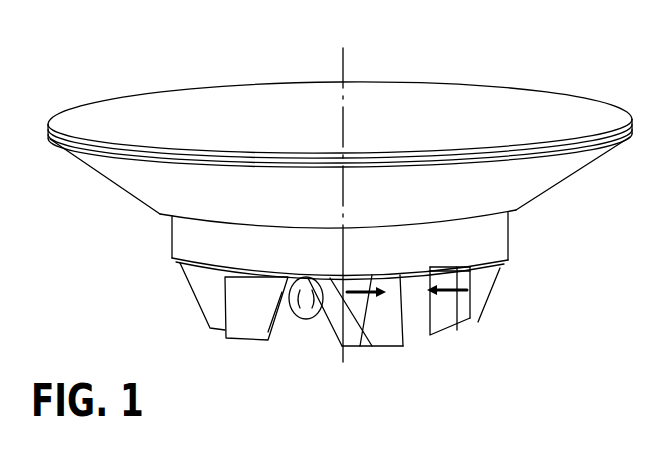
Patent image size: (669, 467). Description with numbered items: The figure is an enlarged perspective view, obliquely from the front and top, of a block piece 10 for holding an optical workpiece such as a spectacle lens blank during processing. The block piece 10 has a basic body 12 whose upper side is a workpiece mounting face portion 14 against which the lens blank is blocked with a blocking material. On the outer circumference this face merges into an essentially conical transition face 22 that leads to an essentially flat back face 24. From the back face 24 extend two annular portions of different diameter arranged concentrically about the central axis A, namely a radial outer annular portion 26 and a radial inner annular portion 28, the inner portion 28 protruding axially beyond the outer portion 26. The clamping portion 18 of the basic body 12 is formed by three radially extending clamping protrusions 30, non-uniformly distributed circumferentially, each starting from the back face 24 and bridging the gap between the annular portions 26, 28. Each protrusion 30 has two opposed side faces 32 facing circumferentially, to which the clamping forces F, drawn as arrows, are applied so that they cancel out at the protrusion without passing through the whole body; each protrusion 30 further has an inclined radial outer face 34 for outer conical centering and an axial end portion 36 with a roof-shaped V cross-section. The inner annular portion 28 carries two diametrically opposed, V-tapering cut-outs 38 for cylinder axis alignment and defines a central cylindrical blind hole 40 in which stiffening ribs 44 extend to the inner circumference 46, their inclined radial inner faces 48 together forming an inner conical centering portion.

The block piece 10 is at (564, 90).
The basic body 12 is at (157, 184).
The workpiece mounting face portion 14 is at (396, 131).
The clamping portion 18 is at (411, 322).
The conical transition face 22 is at (388, 208).
The back face 24 is at (172, 220).
The radial outer annular portion 26 is at (282, 263).
The radial inner annular portion 28 is at (266, 323).
The clamping protrusion 30 is at (206, 308).
The side face 32 is at (200, 289).
The radial outer face 34 is at (196, 284).
The axial end portion 36 is at (216, 316).
The cut-out 38 is at (281, 330).
The central cylindrical blind hole 40 is at (308, 320).
The stiffening rib 44 is at (318, 276).
The inner circumference 46 is at (346, 278).
The radial inner face 48 is at (286, 278).
The central axis A is at (344, 68).
The clamping forces F is at (444, 270).